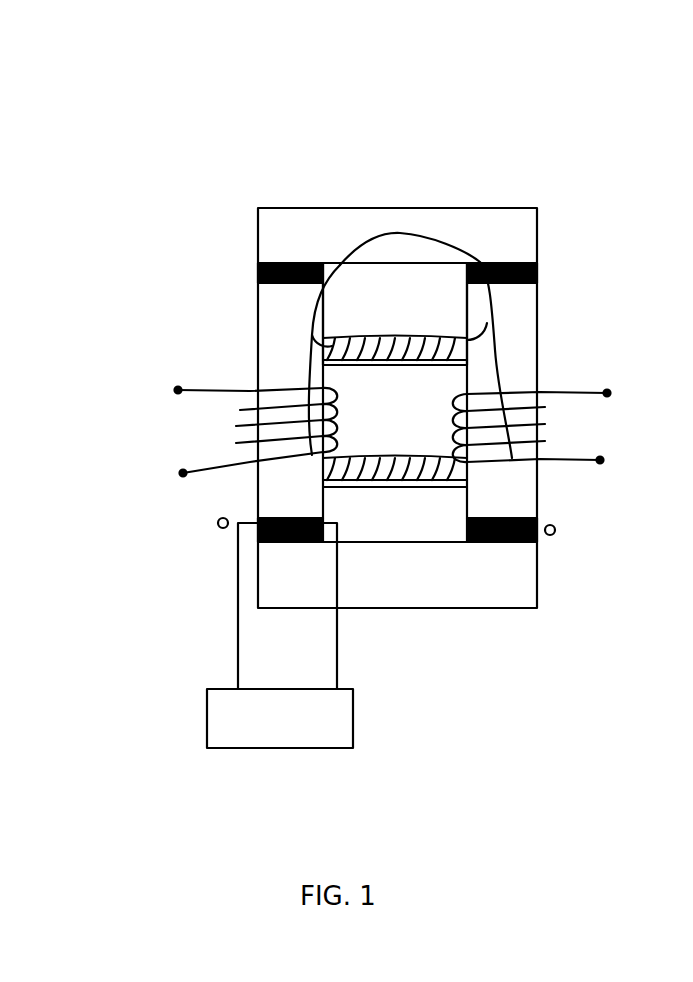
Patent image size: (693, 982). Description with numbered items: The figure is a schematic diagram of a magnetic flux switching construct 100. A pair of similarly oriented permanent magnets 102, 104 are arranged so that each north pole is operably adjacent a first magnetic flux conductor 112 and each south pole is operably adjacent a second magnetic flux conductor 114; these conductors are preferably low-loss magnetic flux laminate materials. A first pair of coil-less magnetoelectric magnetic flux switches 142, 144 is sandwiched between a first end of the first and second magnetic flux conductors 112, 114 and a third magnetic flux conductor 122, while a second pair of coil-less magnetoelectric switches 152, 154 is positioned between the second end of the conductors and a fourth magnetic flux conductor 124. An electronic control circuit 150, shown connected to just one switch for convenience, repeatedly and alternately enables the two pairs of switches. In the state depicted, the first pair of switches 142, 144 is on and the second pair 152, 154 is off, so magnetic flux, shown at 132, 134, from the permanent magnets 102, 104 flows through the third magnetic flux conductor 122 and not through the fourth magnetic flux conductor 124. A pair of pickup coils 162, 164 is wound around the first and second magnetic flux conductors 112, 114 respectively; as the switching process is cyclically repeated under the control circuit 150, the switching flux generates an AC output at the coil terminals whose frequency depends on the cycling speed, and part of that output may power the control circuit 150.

The magnetic flux switching construct 100 is at (472, 138).
The permanent magnet 102 is at (432, 490).
The permanent magnet 104 is at (340, 265).
The first magnetic flux conductor 112 is at (537, 498).
The second magnetic flux conductor 114 is at (258, 500).
The third magnetic flux conductor 122 is at (478, 227).
The fourth magnetic flux conductor 124 is at (390, 608).
The magnetic flux 132 is at (322, 348).
The magnetic flux 134 is at (400, 234).
The coil-less ME magnetic flux switch 142 is at (258, 272).
The coil-less ME magnetic flux switch 144 is at (537, 267).
The electronic control circuit 150 is at (265, 748).
The coil-less ME magnetic flux switch 152 is at (240, 540).
The coil-less ME magnetic flux switch 154 is at (537, 541).
The pickup coil 162 is at (607, 393).
The pickup coil 164 is at (178, 390).